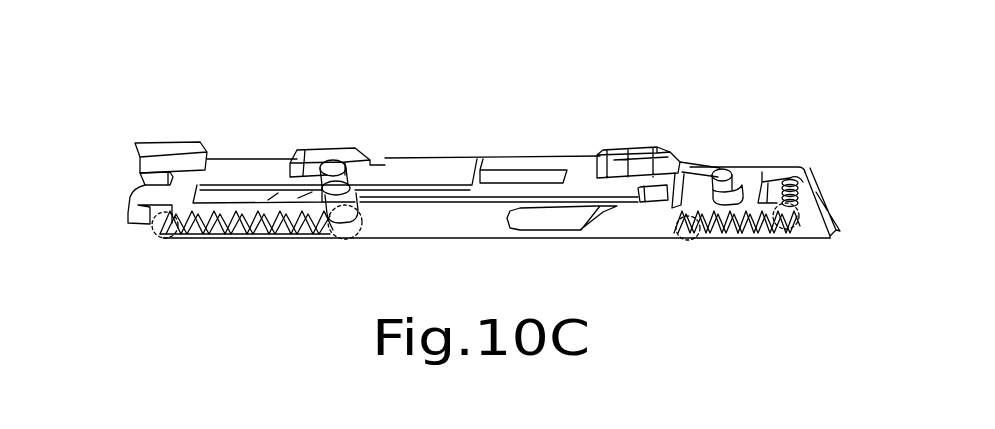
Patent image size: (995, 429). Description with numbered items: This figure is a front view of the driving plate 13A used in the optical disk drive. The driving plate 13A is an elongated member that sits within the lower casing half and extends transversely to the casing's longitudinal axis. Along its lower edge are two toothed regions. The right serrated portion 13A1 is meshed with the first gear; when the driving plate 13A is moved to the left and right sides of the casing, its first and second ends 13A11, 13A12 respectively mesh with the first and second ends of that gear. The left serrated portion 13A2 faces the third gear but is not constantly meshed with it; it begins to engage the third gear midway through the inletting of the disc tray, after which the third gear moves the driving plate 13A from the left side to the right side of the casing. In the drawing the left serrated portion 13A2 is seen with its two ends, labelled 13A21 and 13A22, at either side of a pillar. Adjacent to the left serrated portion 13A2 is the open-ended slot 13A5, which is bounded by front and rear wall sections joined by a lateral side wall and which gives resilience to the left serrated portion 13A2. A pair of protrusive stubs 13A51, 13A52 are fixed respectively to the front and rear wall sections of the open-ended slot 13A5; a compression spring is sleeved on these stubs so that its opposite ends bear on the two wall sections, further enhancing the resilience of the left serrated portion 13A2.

The driving plate 13A is at (520, 157).
The right serrated portion 13A1 is at (235, 238).
The first end of the right serrated portion 13A11 is at (170, 238).
The second end of the right serrated portion 13A12 is at (327, 238).
The left serrated portion 13A2 is at (707, 224).
The second rack left portion 13A21 is at (687, 238).
The second rack right portion 13A22 is at (780, 238).
The open-ended slot 13A5 is at (781, 184).
The protrusive stub 13A51 is at (807, 181).
The protrusive stub 13A52 is at (815, 203).